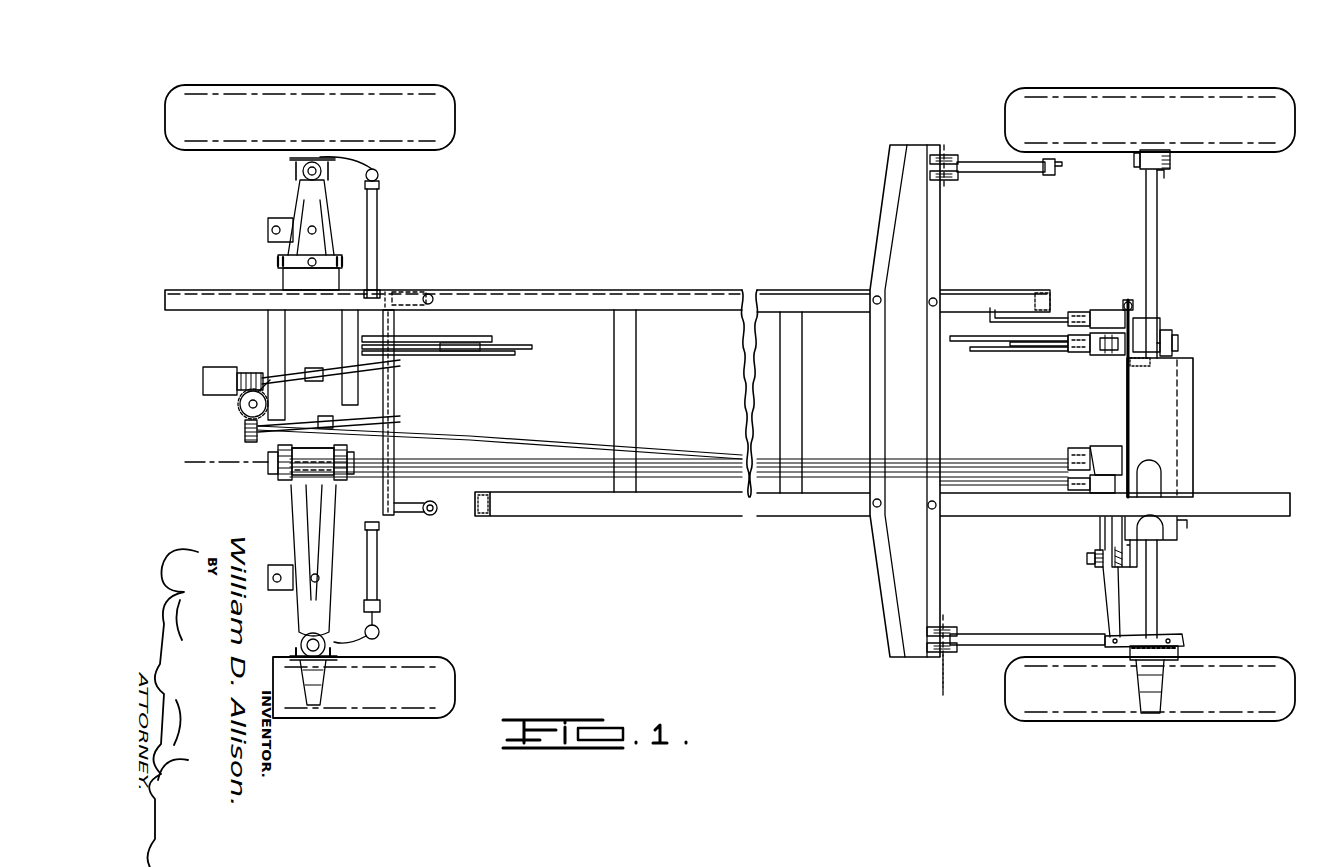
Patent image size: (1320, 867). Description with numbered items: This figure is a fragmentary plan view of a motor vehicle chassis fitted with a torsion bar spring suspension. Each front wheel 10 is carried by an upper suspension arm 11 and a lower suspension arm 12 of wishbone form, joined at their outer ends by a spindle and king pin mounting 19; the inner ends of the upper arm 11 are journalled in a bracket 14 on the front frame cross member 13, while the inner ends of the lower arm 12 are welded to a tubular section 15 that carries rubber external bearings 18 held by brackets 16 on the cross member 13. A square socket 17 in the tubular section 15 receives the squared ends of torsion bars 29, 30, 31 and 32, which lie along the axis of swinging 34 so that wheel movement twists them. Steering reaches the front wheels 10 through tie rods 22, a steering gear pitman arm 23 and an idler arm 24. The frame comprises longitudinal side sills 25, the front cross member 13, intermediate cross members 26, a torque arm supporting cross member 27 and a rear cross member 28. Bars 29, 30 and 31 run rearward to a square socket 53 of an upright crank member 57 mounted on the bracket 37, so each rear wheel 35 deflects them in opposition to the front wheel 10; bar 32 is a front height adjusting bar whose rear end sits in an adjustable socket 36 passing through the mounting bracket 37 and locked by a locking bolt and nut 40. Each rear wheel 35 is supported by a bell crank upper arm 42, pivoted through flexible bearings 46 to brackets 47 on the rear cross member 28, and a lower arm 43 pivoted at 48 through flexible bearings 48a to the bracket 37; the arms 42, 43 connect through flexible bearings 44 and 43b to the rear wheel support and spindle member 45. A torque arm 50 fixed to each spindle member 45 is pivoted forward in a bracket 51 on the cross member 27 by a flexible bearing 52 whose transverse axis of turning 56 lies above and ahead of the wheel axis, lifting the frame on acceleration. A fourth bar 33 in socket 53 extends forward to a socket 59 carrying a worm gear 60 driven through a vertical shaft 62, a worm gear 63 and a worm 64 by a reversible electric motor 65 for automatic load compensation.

The front wheel 10 is at (383, 94).
The upper suspension arm 11 is at (298, 190).
The lower suspension arm 12 is at (292, 543).
The front frame cross member 13 is at (272, 326).
The bracket 14 is at (329, 252).
The tubular section 15 is at (302, 482).
The brackets 16 is at (270, 478).
The square socket 17 is at (307, 456).
The external bearings 18 is at (285, 484).
The spindle and king pin mounting 19 is at (296, 160).
The tie rods 22 is at (378, 228).
The steering gear pitman arm 23 is at (424, 508).
The idler arm 24 is at (410, 292).
The longitudinal side sills 25 is at (638, 517).
The intermediate cross members 26 is at (630, 388).
The torque arm supporting cross member 27 is at (885, 233).
The rear cross member 28 is at (646, 291).
The torsion bar 29 is at (504, 348).
The torsion bar 30 is at (485, 338).
The torsion bar 31 is at (452, 350).
The torsion bar 32 is at (436, 338).
The torsion bar 33 is at (395, 366).
The axis of swinging 34 is at (188, 461).
The rear wheel 35 is at (1218, 96).
The adjustable socket 36 is at (1075, 314).
The mounting bracket 37 is at (1125, 300).
The locking bolt and nut 40 is at (1128, 298).
The upper arm 42 is at (1106, 611).
The lower arm 43 is at (1159, 246).
The flexible bearings 43b is at (1166, 173).
The flexible bearings 44 is at (1122, 636).
The rear wheel support and spindle member 45 is at (1170, 155).
The flexible bearings 46 is at (1097, 578).
The brackets 47 is at (1126, 567).
The pivotal attachment 48 is at (1172, 343).
The flexible bearings 48a is at (1162, 340).
The torque arm 50 is at (1004, 172).
The bracket 51 is at (942, 150).
The flexible bearing 52 is at (960, 163).
The square socket 53 is at (1074, 352).
The transverse axis of turning 56 is at (945, 675).
The crank member 57 is at (1101, 457).
The socket 59 is at (310, 375).
The worm gear 60 is at (242, 360).
The vertical shaft 62 is at (249, 404).
The worm gear 63 is at (242, 416).
The worm 64 is at (262, 373).
The reversible electric motor 65 is at (203, 385).